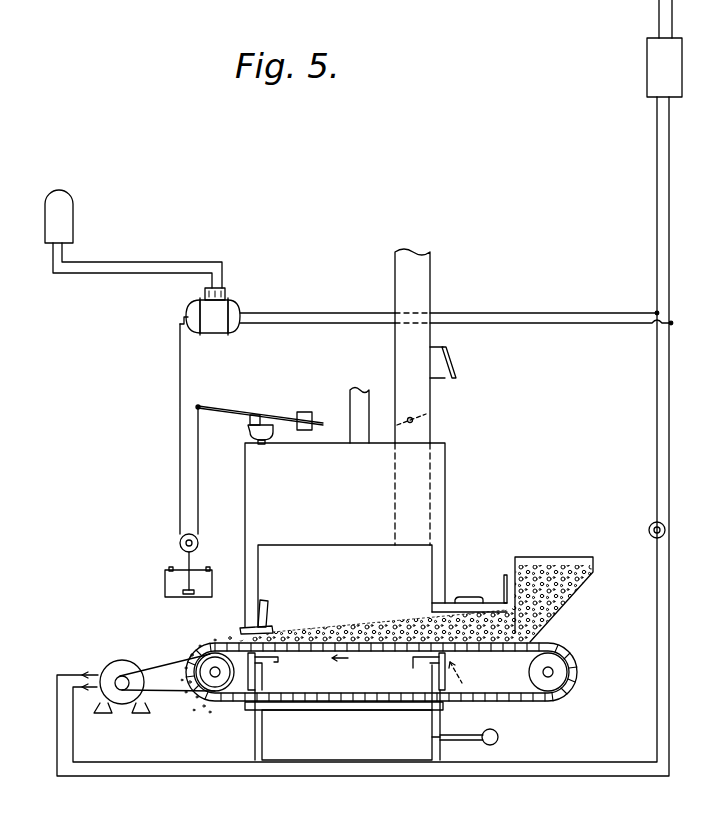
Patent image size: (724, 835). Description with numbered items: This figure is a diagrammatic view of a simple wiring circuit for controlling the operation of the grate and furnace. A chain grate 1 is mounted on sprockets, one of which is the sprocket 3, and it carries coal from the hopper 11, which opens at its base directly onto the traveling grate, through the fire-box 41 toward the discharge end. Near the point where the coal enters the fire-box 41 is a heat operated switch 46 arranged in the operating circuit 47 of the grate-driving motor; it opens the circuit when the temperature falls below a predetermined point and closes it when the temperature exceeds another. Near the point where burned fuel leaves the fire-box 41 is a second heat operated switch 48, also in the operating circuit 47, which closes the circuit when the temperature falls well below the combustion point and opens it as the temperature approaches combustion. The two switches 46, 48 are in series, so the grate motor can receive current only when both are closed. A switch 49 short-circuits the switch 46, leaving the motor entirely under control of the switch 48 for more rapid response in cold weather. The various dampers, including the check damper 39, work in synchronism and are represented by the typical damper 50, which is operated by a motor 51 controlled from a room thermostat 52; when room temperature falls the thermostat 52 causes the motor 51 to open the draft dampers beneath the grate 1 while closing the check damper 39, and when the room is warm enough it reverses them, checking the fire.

The chain grate 1 is at (326, 697).
The sprocket 3 is at (113, 660).
The hopper 11 is at (547, 560).
The check damper 39 is at (452, 368).
The fire-box 41 is at (345, 535).
The heat operated switch 46 is at (413, 663).
The operating circuit 47 is at (328, 776).
The heat operated switch 48 is at (278, 662).
The switch 49 is at (498, 734).
The typical damper 50 is at (165, 580).
The motor 51 is at (238, 302).
The room thermostat 52 is at (73, 222).